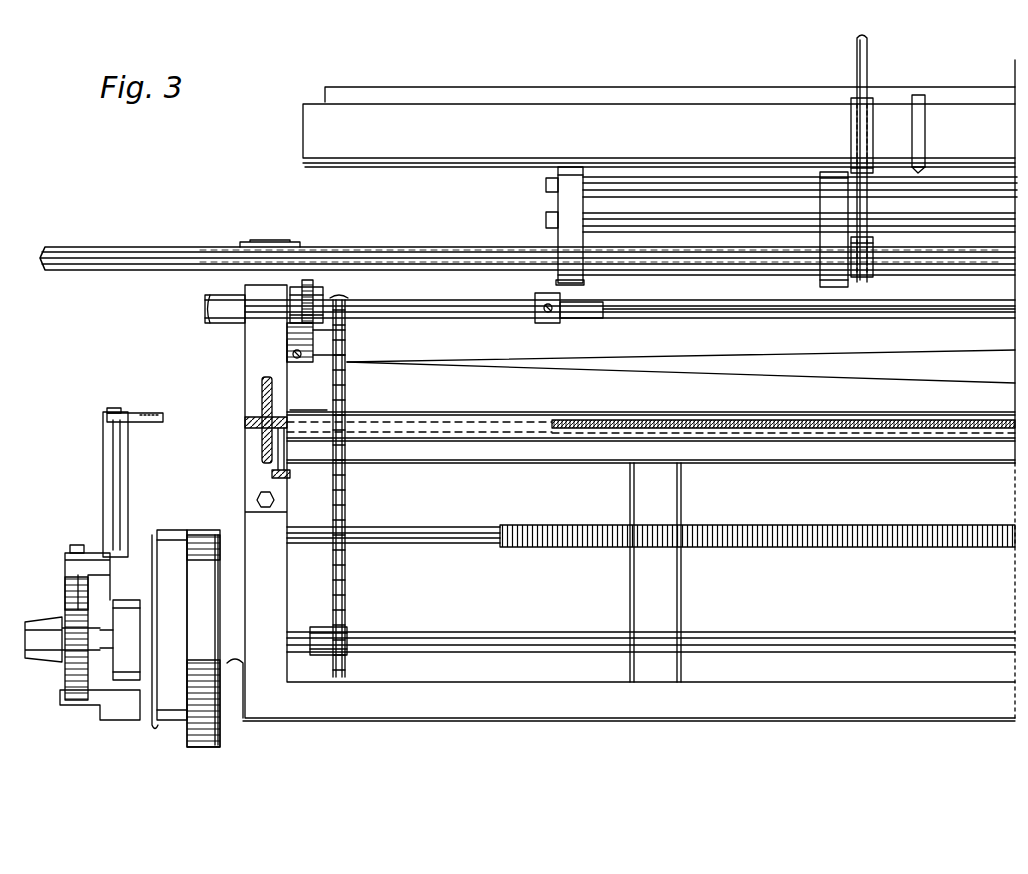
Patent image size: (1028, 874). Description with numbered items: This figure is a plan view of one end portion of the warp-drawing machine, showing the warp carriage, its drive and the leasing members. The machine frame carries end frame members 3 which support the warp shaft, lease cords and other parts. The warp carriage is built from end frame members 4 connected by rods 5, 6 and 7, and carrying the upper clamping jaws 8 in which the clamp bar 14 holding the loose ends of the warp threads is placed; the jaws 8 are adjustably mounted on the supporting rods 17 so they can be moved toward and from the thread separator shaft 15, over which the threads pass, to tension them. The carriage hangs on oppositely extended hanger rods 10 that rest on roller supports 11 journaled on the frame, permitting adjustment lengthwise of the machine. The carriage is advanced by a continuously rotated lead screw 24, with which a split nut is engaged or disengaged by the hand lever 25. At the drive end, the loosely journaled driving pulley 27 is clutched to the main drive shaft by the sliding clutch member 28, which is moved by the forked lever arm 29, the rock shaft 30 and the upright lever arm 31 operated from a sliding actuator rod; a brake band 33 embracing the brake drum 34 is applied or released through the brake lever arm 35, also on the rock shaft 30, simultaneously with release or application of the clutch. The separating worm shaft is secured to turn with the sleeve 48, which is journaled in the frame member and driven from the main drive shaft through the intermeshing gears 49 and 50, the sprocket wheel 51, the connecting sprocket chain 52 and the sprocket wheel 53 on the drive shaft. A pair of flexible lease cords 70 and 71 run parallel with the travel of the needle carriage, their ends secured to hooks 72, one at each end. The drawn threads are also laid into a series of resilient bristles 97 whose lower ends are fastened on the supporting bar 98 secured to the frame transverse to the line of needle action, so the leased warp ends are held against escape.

The end frame member 3 is at (260, 395).
The end frame member 4 is at (558, 202).
The rod 5 is at (985, 236).
The connecting rod 6 is at (915, 272).
The rod 7 is at (938, 188).
The upper clamping jaw 8 is at (873, 100).
The hanger rod 10 is at (340, 250).
The roller support 11 is at (245, 243).
The clamp bar 14 is at (712, 128).
The thread separator shaft 15 is at (885, 312).
The supporting rod 17 is at (867, 55).
The lead screw 24 is at (588, 547).
The hand lever 25 is at (505, 635).
The driving pulley 27 is at (208, 745).
The sliding clutch member 28 is at (160, 610).
The forked lever arm 29 is at (127, 587).
The rock shaft 30 is at (128, 462).
The upright lever arm 31 is at (152, 420).
The brake band 33 is at (72, 600).
The brake drum 34 is at (67, 670).
The brake lever arm 35 is at (97, 553).
The sleeve 48 is at (460, 312).
The gear 49 is at (313, 287).
The gear 50 is at (300, 360).
The sprocket wheel 51 is at (345, 342).
The sprocket chain 52 is at (347, 495).
The sprocket wheel 53 is at (352, 637).
The lease cord 70 is at (800, 353).
The lease cord 71 is at (805, 373).
The hook 72 is at (290, 352).
The resilient bristle 97 is at (968, 432).
The supporting bar 98 is at (925, 418).